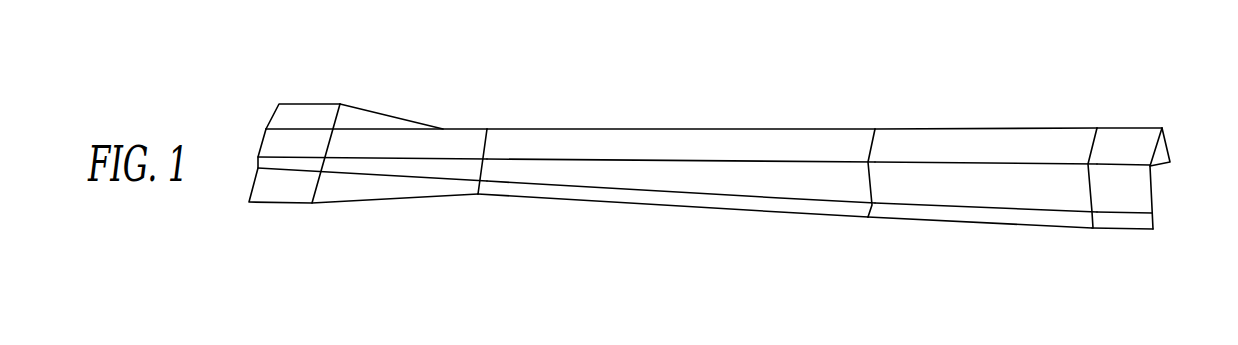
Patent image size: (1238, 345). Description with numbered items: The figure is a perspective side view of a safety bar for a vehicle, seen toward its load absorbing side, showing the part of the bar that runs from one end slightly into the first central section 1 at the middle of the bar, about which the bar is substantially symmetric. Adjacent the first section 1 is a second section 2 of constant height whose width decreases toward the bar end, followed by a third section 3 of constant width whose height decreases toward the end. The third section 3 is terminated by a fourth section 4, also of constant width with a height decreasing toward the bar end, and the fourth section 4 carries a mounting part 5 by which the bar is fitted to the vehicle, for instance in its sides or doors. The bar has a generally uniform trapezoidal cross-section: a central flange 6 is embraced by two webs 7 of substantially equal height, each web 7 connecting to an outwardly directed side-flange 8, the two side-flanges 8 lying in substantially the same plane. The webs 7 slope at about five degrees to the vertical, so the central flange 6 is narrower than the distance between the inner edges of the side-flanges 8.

The first central section 1 is at (1127, 114).
The second section 2 is at (949, 118).
The third section 3 is at (685, 118).
The fourth section 4 is at (396, 106).
The mounting part 5 is at (309, 95).
The central flange 6 is at (284, 138).
The web 7 is at (290, 163).
The side-flange 8 is at (290, 110).